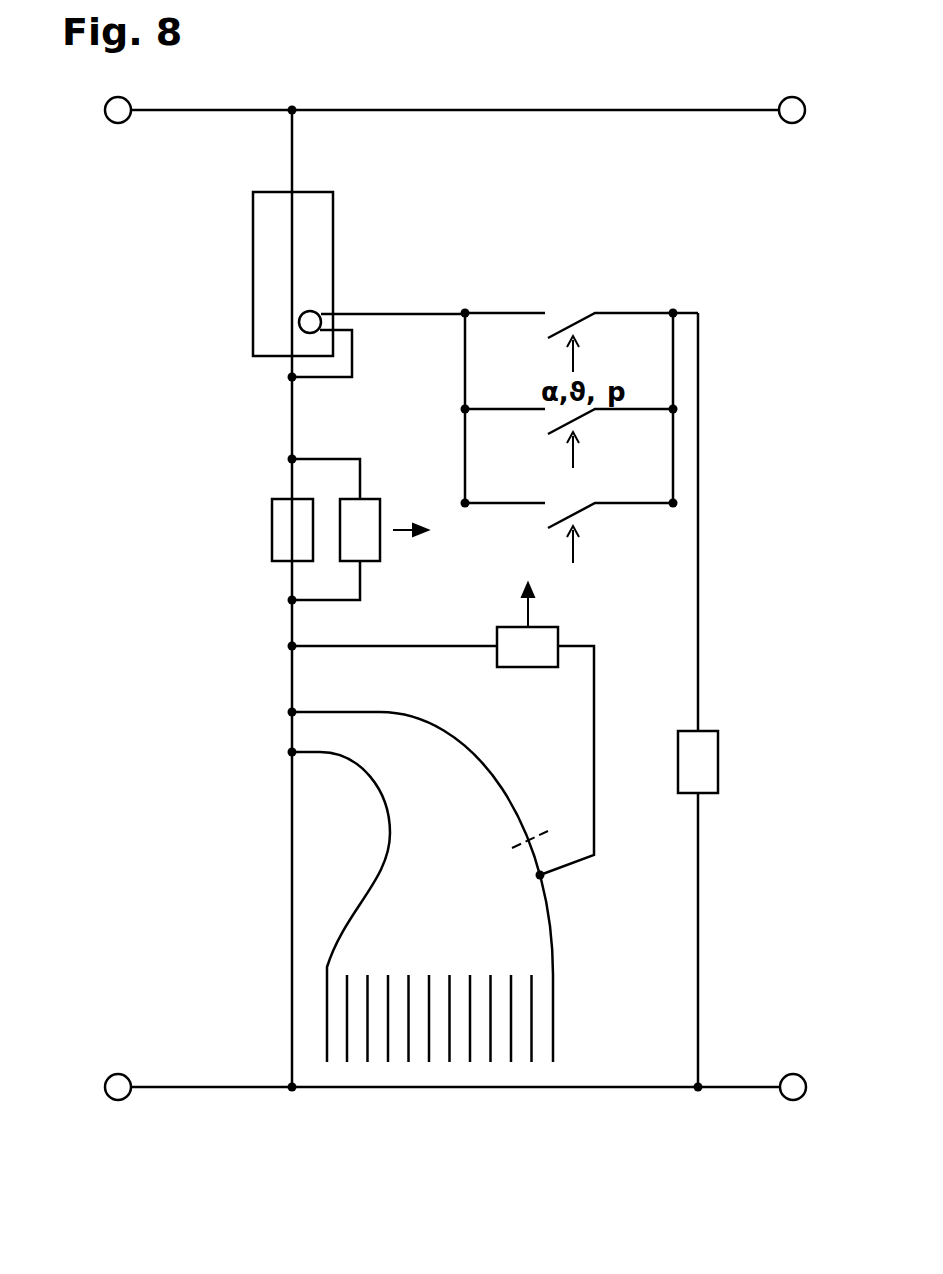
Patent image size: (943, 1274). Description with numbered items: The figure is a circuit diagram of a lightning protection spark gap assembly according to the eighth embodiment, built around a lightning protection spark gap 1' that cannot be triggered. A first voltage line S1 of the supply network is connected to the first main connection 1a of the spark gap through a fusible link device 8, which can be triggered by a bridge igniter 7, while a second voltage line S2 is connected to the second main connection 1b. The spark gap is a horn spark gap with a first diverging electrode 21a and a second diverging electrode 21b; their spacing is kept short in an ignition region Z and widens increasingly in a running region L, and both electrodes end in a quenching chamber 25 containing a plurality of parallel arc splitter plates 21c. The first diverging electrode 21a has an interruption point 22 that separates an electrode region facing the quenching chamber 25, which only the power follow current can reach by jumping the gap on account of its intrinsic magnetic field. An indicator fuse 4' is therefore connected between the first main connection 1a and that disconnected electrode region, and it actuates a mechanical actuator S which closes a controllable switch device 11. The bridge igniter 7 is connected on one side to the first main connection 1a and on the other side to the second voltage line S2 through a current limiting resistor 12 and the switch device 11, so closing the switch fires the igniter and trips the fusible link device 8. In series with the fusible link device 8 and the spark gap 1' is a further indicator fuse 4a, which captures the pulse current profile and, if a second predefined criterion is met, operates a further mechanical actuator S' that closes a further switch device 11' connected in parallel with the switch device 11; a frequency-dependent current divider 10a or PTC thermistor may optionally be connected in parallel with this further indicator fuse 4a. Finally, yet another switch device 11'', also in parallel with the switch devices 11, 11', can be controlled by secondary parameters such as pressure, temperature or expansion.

The fusible link device 8 is at (252, 268).
The bridge igniter 7 is at (299, 323).
The yet another switch device 11'' is at (571, 342).
The further switch device 11' is at (570, 438).
The controllable switch device 11 is at (569, 533).
The frequency-dependent current divider 10a is at (271, 529).
The further indicator fuse 4a is at (381, 517).
The indicator fuse 4' is at (443, 751).
The current limiting resistor 12 is at (719, 762).
The lightning protection spark gap 1' is at (362, 865).
The first main connection 1a is at (290, 711).
The second main connection 1b is at (290, 760).
The first diverging electrode 21a is at (410, 722).
The second diverging electrode 21b is at (372, 787).
The arc splitter plates 21c is at (346, 1023).
The interruption point 22 is at (527, 845).
The quenching chamber 25 is at (579, 1012).
The ignition region Z is at (347, 738).
The running region L is at (445, 949).
The mechanical actuator S is at (587, 585).
The further mechanical actuator S' is at (526, 521).
The first voltage line S1 is at (588, 108).
The second voltage line S2 is at (493, 1090).